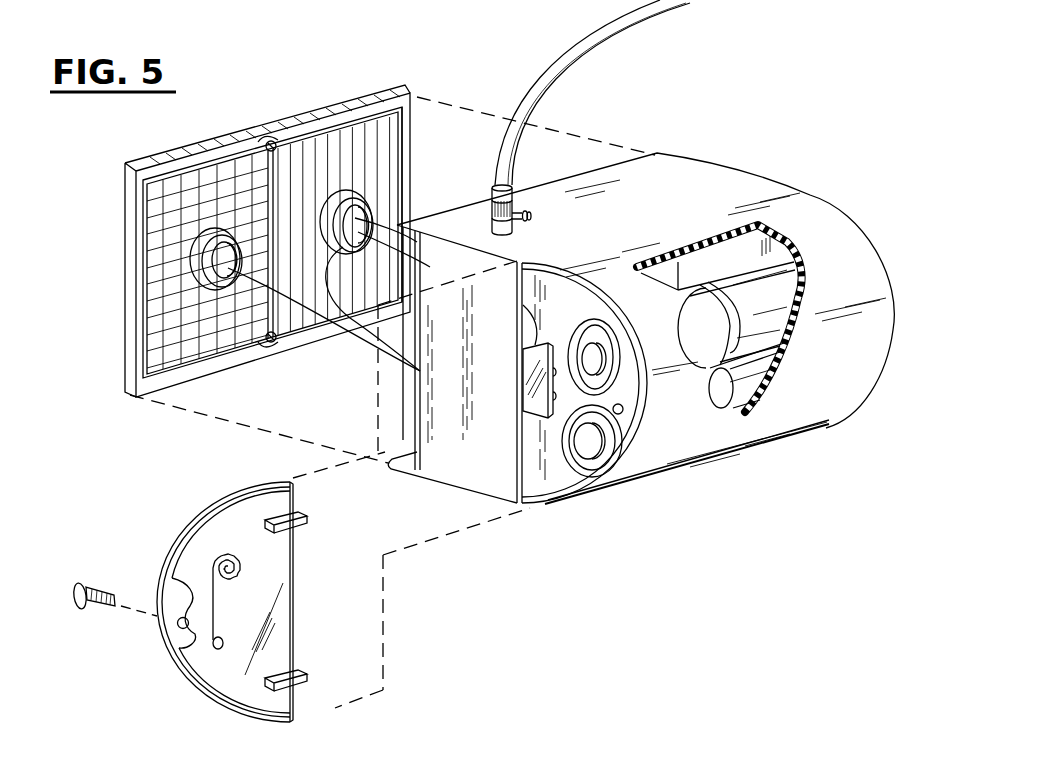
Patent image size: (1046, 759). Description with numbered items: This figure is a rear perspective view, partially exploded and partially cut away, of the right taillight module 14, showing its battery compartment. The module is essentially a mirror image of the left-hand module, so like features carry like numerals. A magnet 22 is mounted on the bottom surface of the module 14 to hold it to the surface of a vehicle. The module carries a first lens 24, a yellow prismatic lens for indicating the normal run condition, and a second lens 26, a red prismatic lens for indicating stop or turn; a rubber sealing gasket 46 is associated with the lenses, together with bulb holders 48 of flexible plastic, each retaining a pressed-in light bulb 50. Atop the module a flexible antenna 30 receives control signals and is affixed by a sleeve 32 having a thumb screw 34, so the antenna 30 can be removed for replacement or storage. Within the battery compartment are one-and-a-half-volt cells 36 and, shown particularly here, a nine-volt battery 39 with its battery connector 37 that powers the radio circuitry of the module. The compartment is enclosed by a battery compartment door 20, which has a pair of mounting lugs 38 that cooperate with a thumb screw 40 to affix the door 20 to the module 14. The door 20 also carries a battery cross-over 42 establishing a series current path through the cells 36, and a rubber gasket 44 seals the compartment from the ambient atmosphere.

The right taillight module 14 is at (730, 188).
The battery compartment door 20 is at (280, 568).
The magnet 22 is at (279, 0).
The first lens 24 is at (172, 200).
The second lens 26 is at (330, 163).
The antenna 30 is at (623, 28).
The sleeve 32 is at (508, 185).
The thumb screw 34 is at (531, 216).
The 1.5 volt cells 36 is at (600, 462).
The battery connector 37 is at (537, 417).
The mounting lugs 38 is at (307, 525).
The 9-volt battery 39 is at (577, 413).
The thumb screw 40 is at (102, 583).
The battery cross-over 42 is at (236, 552).
The rubber gasket 44 is at (190, 596).
The rubber sealing gasket 46 is at (388, 116).
The bulb holders 48 is at (190, 243).
The light bulb 50 is at (213, 295).